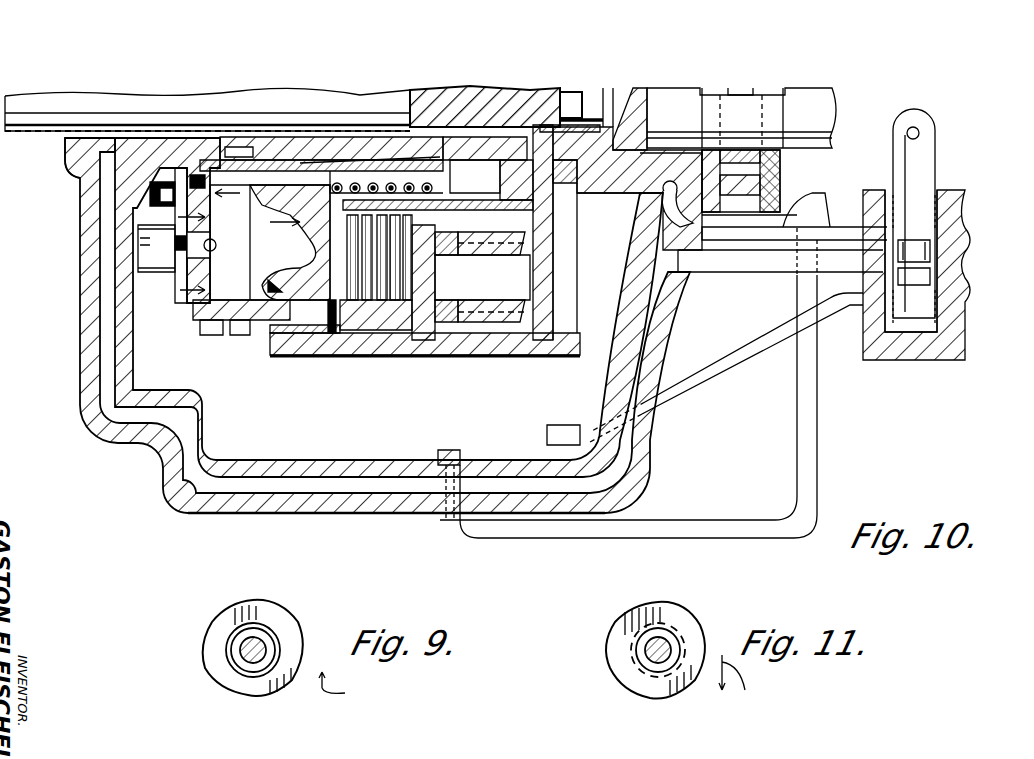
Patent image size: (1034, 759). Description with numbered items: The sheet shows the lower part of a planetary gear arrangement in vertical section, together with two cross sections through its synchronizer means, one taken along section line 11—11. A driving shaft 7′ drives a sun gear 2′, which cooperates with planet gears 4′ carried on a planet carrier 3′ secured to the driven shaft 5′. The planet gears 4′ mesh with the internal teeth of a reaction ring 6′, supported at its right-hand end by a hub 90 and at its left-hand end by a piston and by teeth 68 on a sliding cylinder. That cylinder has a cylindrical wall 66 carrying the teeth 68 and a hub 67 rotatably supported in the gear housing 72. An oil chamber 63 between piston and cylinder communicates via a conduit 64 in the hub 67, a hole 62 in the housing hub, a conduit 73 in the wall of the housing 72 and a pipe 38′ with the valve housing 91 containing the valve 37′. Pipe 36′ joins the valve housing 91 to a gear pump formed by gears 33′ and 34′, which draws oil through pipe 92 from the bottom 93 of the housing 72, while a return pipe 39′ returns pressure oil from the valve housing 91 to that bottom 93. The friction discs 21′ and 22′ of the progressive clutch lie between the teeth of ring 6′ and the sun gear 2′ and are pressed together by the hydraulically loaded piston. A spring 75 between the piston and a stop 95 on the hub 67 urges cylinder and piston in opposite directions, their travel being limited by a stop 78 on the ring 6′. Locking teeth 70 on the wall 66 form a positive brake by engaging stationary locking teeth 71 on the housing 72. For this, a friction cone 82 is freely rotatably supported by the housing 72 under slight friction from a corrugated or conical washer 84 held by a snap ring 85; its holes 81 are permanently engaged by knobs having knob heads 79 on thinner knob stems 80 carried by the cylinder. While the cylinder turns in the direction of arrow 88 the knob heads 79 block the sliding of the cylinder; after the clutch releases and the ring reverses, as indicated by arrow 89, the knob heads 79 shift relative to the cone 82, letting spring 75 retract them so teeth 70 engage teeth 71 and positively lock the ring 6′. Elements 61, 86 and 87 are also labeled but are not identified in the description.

In FIG. 10, the sun gear 2′ is at (570, 215).
In FIG. 10, the planet carrier 3′ is at (585, 183).
In FIG. 10, the planet gears 4′ is at (488, 318).
In FIG. 10, the driven shaft 5′ is at (805, 104).
In FIG. 10, the reaction ring 6′ is at (515, 357).
In FIG. 10, the driving shaft 7′ is at (38, 110).
In FIG. 10, the section line 11 is at (208, 215).
In FIG. 10, the friction disc 21′ is at (350, 345).
In FIG. 10, the friction disc 22′ is at (395, 345).
In FIG. 10, the gear of gear pump 33′ is at (775, 165).
In FIG. 10, the gear of gear pump 34′ is at (770, 190).
In FIG. 10, the pipe 36′ is at (836, 228).
In FIG. 10, the valve 37′ is at (930, 157).
In FIG. 10, the pipe 38′ is at (738, 272).
In FIG. 10, the return pipe 39′ is at (700, 375).
In FIG. 10, the cover plate 61 is at (118, 140).
In FIG. 10, the hole 62 is at (250, 150).
In FIG. 10, the oil chamber 63 is at (236, 160).
In FIG. 10, the conduit 64 is at (278, 160).
In FIG. 10, the cylindrical wall 66 is at (298, 300).
In FIG. 10, the hub 67 is at (318, 165).
In FIG. 10, the teeth 68 is at (278, 340).
In FIG. 10, the locking teeth 70 is at (213, 336).
In FIG. 10, the stationary locking teeth 71 is at (242, 336).
In FIG. 10, the gear housing 72 is at (90, 350).
In FIG. 10, the conduit 73 is at (110, 360).
In FIG. 10, the spring 75 is at (370, 178).
In FIG. 10, the stop 78 is at (322, 360).
In FIG. 10, the knob heads 79 is at (143, 243).
In FIG. 9, the knob heads 79 is at (232, 635).
In FIG. 11, the knob heads 79 is at (637, 655).
In FIG. 10, the knob stems 80 is at (178, 252).
In FIG. 9, the knob stems 80 is at (250, 662).
In FIG. 11, the knob stems 80 is at (657, 667).
In FIG. 10, the holes 81 is at (205, 257).
In FIG. 9, the holes 81 is at (275, 632).
In FIG. 11, the holes 81 is at (625, 637).
In FIG. 10, the friction cone 82 is at (173, 310).
In FIG. 9, the friction cone 82 is at (262, 612).
In FIG. 11, the friction cone 82 is at (680, 617).
In FIG. 10, the corrugated or conical washer 84 is at (150, 190).
In FIG. 10, the snap ring 85 is at (180, 172).
In FIG. 10, the chamber 86 is at (270, 242).
In FIG. 10, the stop 87 is at (215, 178).
In FIG. 11, the arrow 88 is at (746, 686).
In FIG. 9, the arrow 89 is at (348, 692).
In FIG. 10, the hub 90 is at (588, 150).
In FIG. 10, the valve housing 91 is at (950, 272).
In FIG. 10, the pipe 92 is at (803, 376).
In FIG. 10, the bottom of housing 93 is at (346, 455).
In FIG. 10, the stop 95 is at (366, 168).